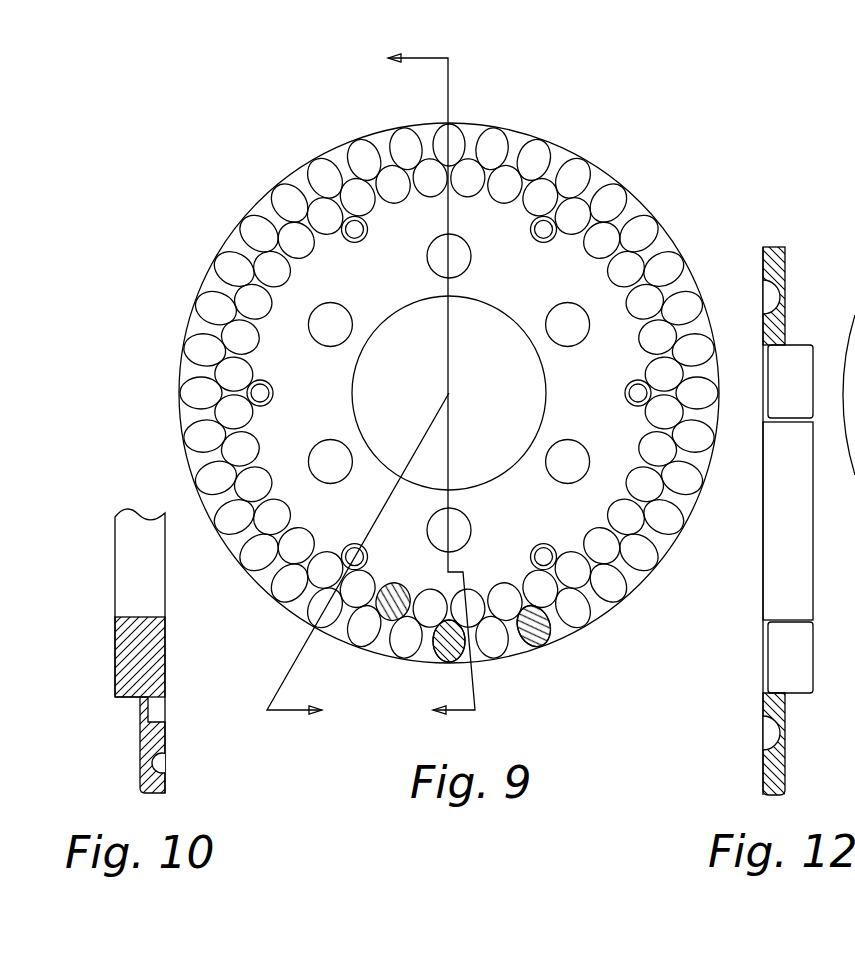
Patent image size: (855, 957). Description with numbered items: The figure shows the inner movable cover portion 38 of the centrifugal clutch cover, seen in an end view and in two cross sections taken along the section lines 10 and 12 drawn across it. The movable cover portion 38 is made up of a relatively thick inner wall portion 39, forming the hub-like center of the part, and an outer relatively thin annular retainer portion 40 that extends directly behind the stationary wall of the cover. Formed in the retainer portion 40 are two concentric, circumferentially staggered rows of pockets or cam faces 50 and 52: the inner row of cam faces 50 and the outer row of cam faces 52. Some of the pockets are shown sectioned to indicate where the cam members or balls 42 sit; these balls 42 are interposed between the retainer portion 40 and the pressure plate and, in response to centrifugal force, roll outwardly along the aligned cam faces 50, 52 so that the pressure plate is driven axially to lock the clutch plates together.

In FIG. 9, the section line 10— 10 is at (358, 561).
In FIG. 9, the section line 12— 12 is at (418, 387).
In FIG. 12, the inner movable cover portion 38 is at (778, 240).
In FIG. 9, the inner wall portion 39 is at (342, 365).
In FIG. 12, the inner wall portion 39 is at (792, 377).
In FIG. 10, the annular retainer portion 40 is at (142, 737).
In FIG. 9, the cam members or balls 42 is at (393, 607).
In FIG. 9, the cam faces 50 is at (540, 593).
In FIG. 12, the cam faces 50 is at (762, 742).
In FIG. 9, the cam faces 52 is at (262, 238).
In FIG. 10, the cam faces 52 is at (165, 765).
In FIG. 12, the cam faces 52 is at (765, 273).